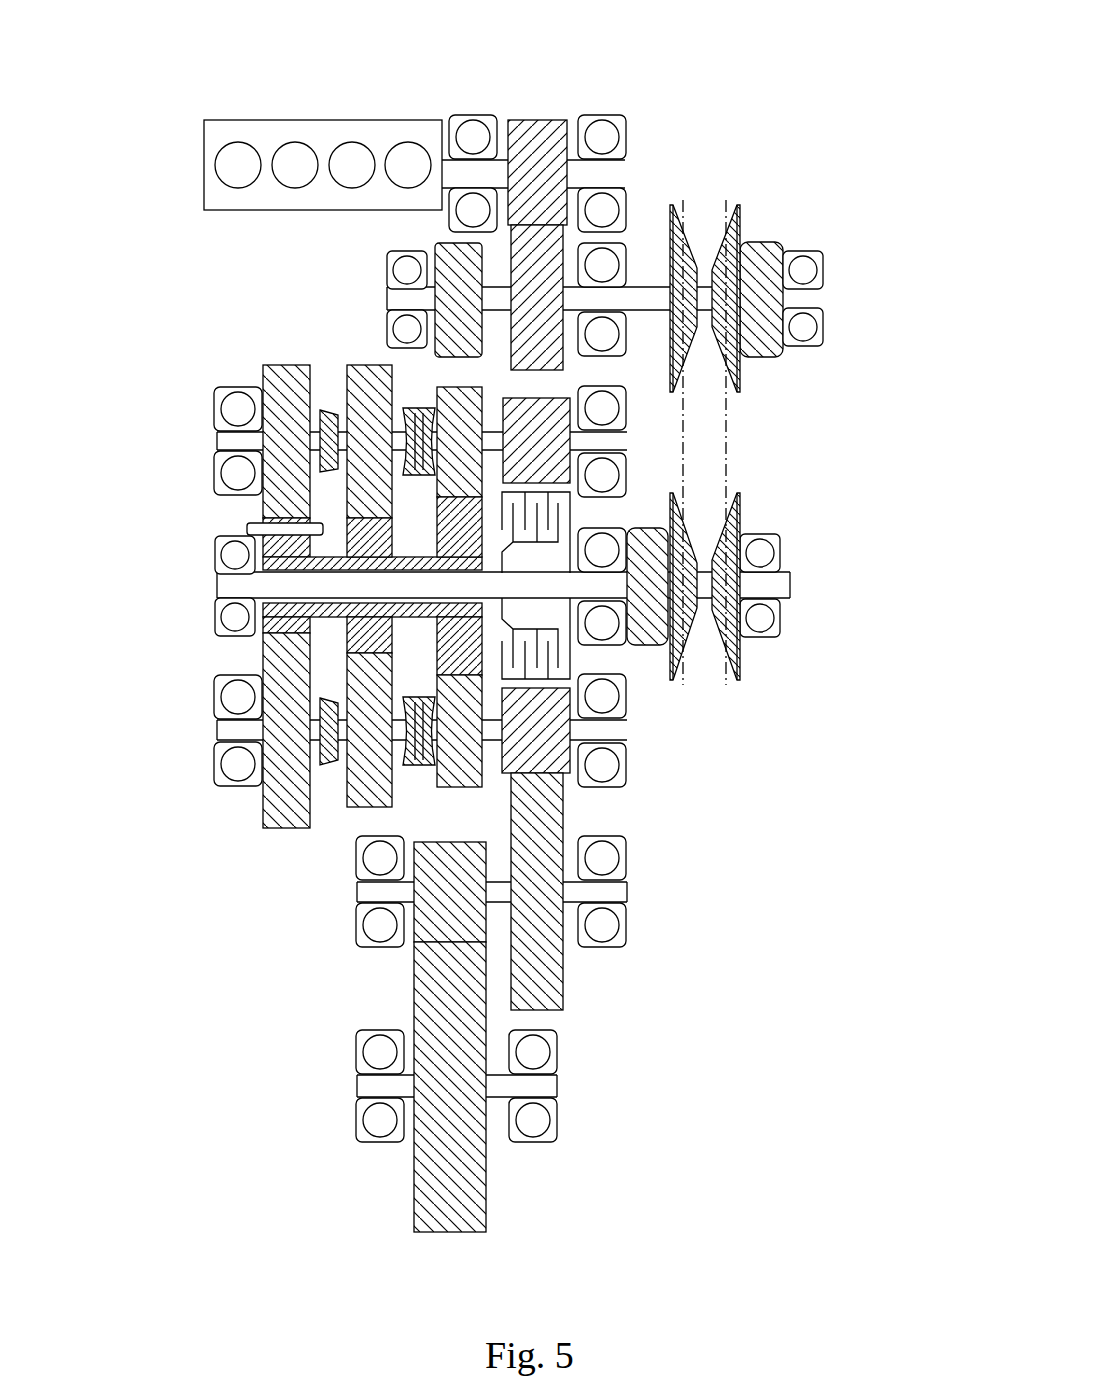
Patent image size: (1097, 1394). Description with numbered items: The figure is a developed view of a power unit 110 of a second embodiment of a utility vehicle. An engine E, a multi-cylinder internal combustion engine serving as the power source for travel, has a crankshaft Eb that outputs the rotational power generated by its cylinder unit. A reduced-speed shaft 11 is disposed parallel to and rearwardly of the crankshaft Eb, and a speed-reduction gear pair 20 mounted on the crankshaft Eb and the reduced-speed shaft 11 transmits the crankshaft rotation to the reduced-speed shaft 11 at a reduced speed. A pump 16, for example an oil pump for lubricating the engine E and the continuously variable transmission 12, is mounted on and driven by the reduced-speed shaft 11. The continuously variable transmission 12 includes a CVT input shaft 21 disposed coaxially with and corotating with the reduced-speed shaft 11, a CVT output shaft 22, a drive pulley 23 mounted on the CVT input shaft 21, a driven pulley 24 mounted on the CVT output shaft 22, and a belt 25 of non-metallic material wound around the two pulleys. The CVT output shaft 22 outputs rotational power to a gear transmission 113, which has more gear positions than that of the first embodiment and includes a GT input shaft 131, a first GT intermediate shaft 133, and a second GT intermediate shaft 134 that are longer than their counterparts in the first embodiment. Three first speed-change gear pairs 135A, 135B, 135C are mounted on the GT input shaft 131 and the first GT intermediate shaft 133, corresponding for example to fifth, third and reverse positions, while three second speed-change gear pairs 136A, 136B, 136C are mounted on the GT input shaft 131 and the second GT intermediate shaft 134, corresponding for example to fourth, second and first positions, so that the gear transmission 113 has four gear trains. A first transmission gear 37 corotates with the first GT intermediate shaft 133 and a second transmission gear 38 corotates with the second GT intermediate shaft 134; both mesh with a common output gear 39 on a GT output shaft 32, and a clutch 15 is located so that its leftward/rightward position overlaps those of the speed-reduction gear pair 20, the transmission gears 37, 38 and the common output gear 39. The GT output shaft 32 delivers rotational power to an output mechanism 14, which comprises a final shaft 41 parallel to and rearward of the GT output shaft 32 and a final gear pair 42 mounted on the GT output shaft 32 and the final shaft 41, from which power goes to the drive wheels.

The engine E is at (231, 107).
The crankshaft Eb is at (622, 165).
The speed-reduction gear pair 20 is at (535, 140).
The power unit 110 is at (813, 97).
The continuously variable transmission 12 is at (815, 222).
The pump 16 is at (447, 251).
The reduced-speed shaft 11 is at (398, 300).
The CVT input shaft 21 is at (815, 297).
The drive pulley 23 is at (736, 240).
The CVT output shaft 22 is at (780, 587).
The driven pulley 24 is at (735, 680).
The belt 25 is at (727, 457).
The first speed-change gear pair 135A is at (445, 395).
The first speed-change gear pair 135B is at (372, 483).
The first speed-change gear pair 135C is at (268, 370).
The first GT intermediate shaft 133 is at (222, 440).
The first transmission gear 37 is at (553, 412).
The GT input shaft 131 is at (225, 587).
The second speed-change gear pair 136A is at (442, 773).
The second speed-change gear pair 136B is at (372, 632).
The second speed-change gear pair 136C is at (278, 803).
The second GT intermediate shaft 134 is at (222, 730).
The clutch 15 is at (573, 655).
The second transmission gear 38 is at (553, 753).
The gear transmission 113 is at (204, 866).
The GT output shaft 32 is at (365, 892).
The output mechanism 14 is at (362, 1010).
The common output gear 39 is at (555, 975).
The final shaft 41 is at (547, 1085).
The final gear pair 42 is at (423, 1175).